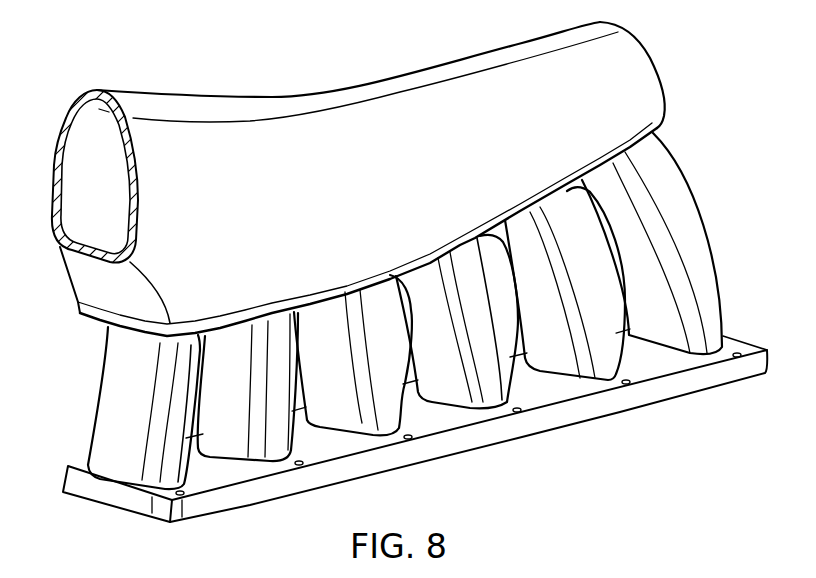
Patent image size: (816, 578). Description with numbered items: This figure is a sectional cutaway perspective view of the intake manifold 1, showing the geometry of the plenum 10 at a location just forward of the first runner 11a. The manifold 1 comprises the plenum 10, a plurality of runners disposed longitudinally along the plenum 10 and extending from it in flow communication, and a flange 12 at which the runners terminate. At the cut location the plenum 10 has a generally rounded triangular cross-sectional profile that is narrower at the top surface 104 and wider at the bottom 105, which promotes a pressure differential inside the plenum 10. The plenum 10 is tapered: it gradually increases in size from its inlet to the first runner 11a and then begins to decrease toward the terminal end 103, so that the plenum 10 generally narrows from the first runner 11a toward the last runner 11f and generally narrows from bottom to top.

The intake manifold 1 is at (731, 55).
The plenum 10 is at (647, 80).
The terminal end 103 is at (640, 38).
The top surface 104 is at (360, 80).
The bottom 105 is at (657, 128).
The first runner 11a is at (113, 410).
The last runner 11f is at (693, 243).
The flange 12 is at (697, 382).